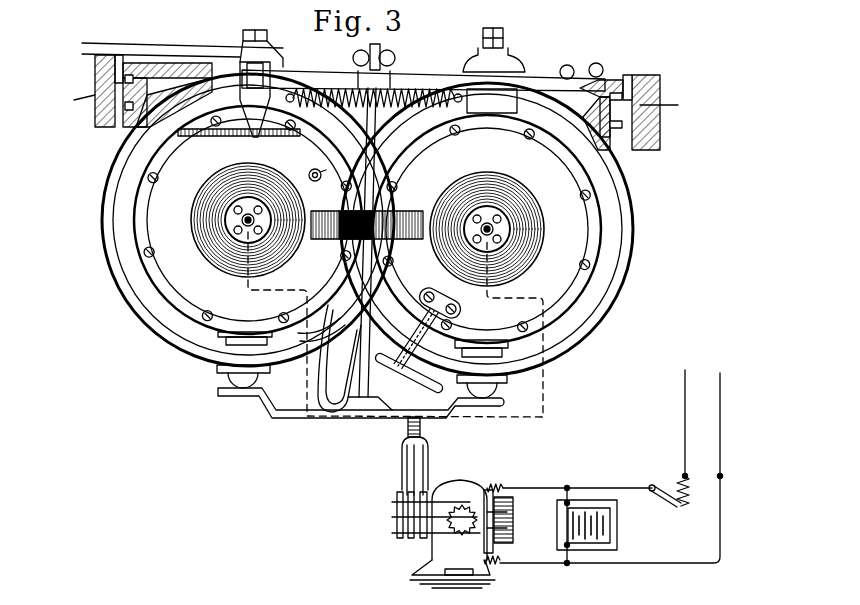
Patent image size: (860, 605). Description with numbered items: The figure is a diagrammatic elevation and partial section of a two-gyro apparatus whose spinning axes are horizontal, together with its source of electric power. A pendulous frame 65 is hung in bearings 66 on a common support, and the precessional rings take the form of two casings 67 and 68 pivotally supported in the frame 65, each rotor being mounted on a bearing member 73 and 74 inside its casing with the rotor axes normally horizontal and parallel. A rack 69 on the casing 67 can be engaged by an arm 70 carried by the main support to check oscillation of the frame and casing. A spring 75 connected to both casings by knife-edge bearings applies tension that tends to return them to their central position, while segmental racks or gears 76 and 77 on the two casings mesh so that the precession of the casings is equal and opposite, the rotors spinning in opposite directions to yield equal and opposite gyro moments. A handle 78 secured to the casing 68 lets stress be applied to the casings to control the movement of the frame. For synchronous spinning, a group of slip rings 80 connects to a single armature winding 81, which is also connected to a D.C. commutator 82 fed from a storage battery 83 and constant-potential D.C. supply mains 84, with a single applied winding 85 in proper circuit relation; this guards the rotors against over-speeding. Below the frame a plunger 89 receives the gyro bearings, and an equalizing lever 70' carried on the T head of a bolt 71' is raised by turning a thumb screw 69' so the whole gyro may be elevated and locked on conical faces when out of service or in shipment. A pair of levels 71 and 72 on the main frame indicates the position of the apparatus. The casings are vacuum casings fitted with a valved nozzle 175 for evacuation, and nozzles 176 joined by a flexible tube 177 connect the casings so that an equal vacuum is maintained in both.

The frame 65 is at (440, 82).
The bearings 66 is at (122, 55).
The casing 67 is at (248, 220).
The casing 68 is at (487, 229).
The rack 69 is at (239, 145).
The thumb screw 69' is at (389, 54).
The arm 70 is at (280, 83).
The equalizing lever 70' is at (390, 430).
The level 71 is at (567, 59).
The bolt 71' is at (356, 242).
The level 72 is at (595, 63).
The bearing member 73 is at (246, 219).
The bearing member 74 is at (490, 227).
The spring 75 is at (374, 112).
The segmental rack 76 is at (328, 240).
The segmental rack 77 is at (408, 239).
The handle 78 is at (418, 340).
The slip rings 80 is at (397, 528).
The armature winding 81 is at (462, 535).
The commutator 82 is at (514, 527).
The storage battery 83 is at (614, 529).
The supply mains 84 is at (721, 458).
The applied winding 85 is at (493, 482).
The plunger 89 is at (238, 381).
The valved nozzle 175 is at (323, 185).
The nozzle 176 is at (317, 327).
The flexible tube 177 is at (317, 379).